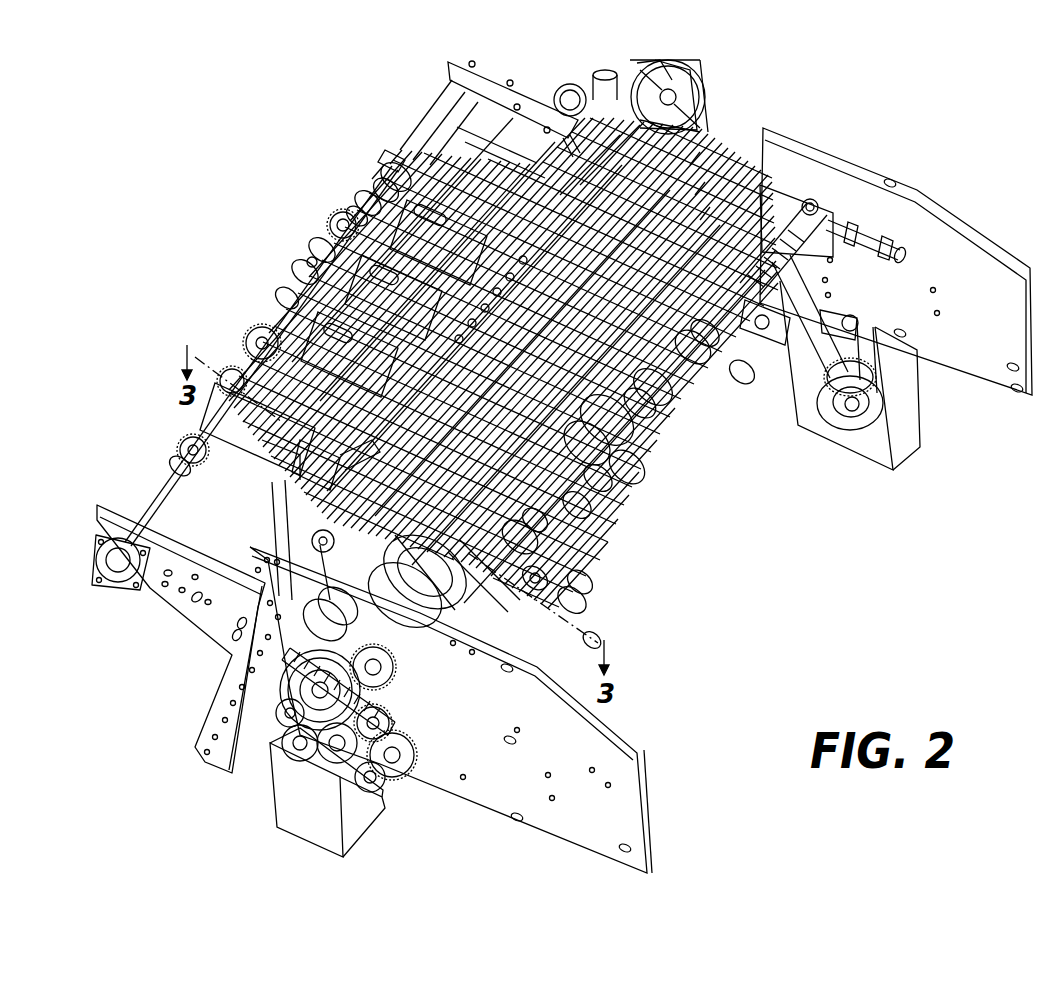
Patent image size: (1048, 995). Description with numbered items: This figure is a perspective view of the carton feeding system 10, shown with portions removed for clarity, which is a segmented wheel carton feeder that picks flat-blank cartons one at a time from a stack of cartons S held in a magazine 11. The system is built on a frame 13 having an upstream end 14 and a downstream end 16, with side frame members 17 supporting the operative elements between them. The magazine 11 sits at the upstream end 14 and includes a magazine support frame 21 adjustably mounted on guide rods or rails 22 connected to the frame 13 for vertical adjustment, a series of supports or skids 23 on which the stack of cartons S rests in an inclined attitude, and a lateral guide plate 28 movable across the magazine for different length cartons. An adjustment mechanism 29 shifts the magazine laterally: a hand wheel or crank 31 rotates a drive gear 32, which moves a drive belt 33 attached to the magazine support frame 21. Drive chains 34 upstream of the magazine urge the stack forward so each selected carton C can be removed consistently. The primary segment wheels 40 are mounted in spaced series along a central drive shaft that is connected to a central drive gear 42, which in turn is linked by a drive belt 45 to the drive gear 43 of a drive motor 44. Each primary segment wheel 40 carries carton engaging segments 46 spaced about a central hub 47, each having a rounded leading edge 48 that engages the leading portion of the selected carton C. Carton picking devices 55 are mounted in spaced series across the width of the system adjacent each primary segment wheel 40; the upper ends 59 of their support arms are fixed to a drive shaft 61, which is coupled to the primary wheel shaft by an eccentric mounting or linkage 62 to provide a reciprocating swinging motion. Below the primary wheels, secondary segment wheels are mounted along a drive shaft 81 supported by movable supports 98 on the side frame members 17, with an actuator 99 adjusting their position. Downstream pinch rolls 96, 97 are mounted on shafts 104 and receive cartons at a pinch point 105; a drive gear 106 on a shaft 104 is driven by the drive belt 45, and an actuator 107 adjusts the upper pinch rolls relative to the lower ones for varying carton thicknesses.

The carton feeding system 10 is at (262, 108).
The magazine 11 is at (370, 196).
The frame 13 is at (905, 164).
The upstream end 14 is at (322, 218).
The downstream end 16 is at (760, 498).
The side frame members 17 is at (870, 150).
The magazine support frame 21 is at (252, 434).
The guide rods or rails 22 is at (218, 700).
The supports or skids 23 is at (292, 300).
The lateral guide plate 28 is at (374, 163).
The adjustment mechanism 29 is at (687, 59).
The hand wheel or crank 31 is at (660, 68).
The drive gear 32 is at (700, 152).
The drive belt 33 is at (570, 84).
The drive chains 34 is at (256, 338).
The primary segment wheels 40 is at (548, 578).
The central drive gear 42 is at (248, 676).
The drive gear 43 is at (440, 672).
The drive motor 44 is at (495, 618).
The drive belt 45 is at (440, 720).
The carton engaging segments 46 is at (582, 515).
The central hub 47 is at (540, 545).
The rounded leading edge 48 is at (602, 490).
The carton picking device 55 is at (702, 358).
The upper ends 59 is at (710, 207).
The drive shaft 61 is at (705, 182).
The eccentric mounting or linkage 62 is at (316, 540).
The drive shaft 81 is at (272, 728).
The downstream pinch roll 96 is at (640, 420).
The downstream pinch roll 97 is at (634, 473).
The movable supports 98 is at (857, 157).
The actuator 99 is at (735, 318).
The shafts 104 is at (652, 396).
The pinch point 105 is at (752, 375).
The drive gear 106 is at (396, 778).
The actuator 107 is at (868, 272).
The selected carton C is at (302, 456).
The stack of cartons S is at (345, 470).